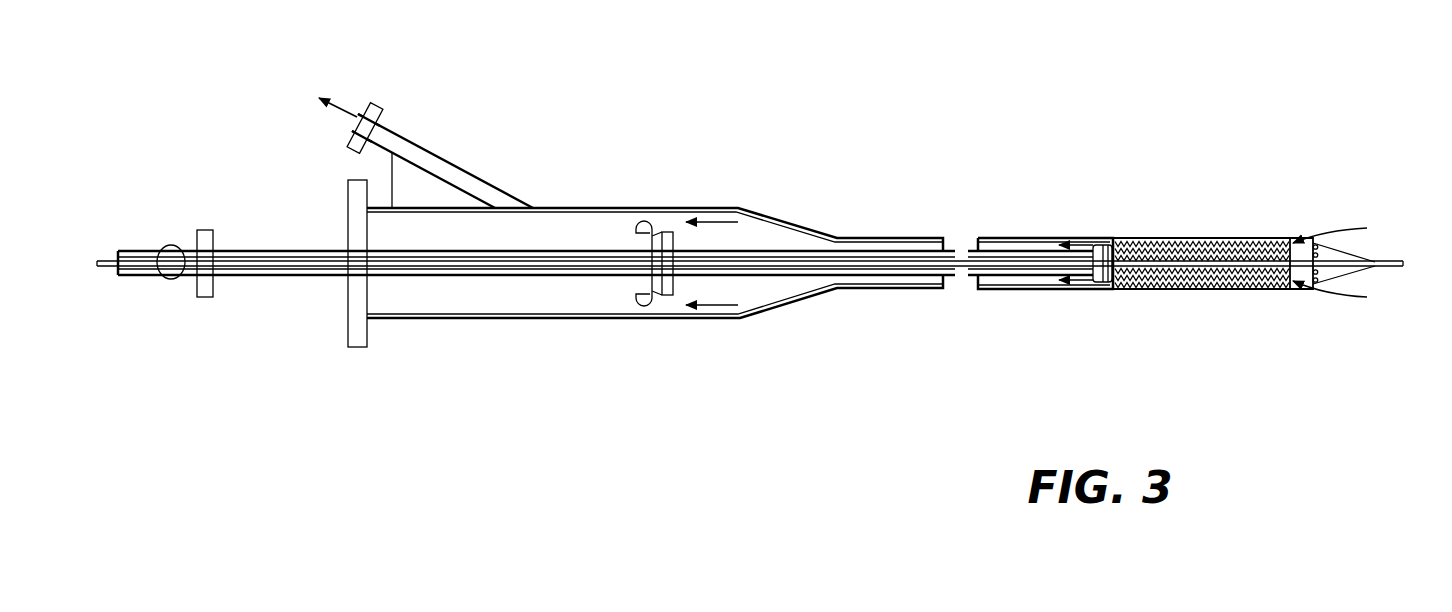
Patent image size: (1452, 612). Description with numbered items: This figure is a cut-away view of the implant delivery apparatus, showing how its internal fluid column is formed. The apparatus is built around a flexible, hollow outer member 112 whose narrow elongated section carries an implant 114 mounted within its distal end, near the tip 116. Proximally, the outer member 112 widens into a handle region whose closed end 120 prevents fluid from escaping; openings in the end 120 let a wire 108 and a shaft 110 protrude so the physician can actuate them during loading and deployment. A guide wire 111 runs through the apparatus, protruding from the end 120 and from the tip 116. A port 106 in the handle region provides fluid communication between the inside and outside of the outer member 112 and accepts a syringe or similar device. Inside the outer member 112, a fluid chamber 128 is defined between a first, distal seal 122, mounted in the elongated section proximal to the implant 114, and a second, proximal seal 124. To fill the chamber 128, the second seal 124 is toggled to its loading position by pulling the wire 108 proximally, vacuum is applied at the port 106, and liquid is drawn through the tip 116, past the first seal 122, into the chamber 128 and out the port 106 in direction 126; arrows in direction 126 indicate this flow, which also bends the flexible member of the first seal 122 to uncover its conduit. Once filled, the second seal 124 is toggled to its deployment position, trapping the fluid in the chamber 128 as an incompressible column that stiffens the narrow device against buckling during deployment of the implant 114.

The port 106 is at (361, 101).
The wire 108 is at (227, 251).
The shaft 110 is at (190, 247).
The guide wire 111 is at (1383, 268).
The hollow outer member 112 is at (1155, 238).
The implant 114 is at (1181, 290).
The tip 116 is at (1353, 248).
The end 120 is at (352, 348).
The first seal 122 is at (1092, 295).
The second seal 124 is at (634, 308).
The direction 126 is at (335, 106).
The chamber 128 is at (800, 289).